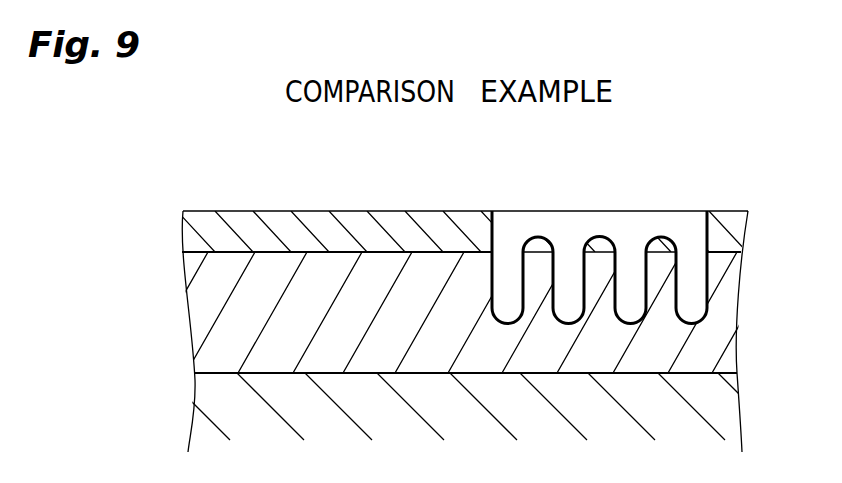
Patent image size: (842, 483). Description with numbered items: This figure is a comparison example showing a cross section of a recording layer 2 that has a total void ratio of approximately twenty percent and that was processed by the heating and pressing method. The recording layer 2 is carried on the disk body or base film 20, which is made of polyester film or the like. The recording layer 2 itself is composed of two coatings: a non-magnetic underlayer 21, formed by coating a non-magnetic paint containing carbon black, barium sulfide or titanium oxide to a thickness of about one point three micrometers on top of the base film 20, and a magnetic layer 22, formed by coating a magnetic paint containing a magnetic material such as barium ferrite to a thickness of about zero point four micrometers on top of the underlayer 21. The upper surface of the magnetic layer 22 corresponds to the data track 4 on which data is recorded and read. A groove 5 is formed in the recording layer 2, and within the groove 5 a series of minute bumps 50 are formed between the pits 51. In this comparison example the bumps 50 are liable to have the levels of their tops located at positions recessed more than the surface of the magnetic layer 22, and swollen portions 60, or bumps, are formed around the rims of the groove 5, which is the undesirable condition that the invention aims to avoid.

The recording layer 2 is at (98, 222).
The data track 4 is at (323, 211).
The groove 5 is at (683, 236).
The base film 20 is at (215, 402).
The non-magnetic underlayer 21 is at (213, 318).
The magnetic layer 22 is at (192, 239).
The bumps 50 is at (662, 237).
The pits 51 is at (502, 282).
The swollen portions 60 is at (493, 211).